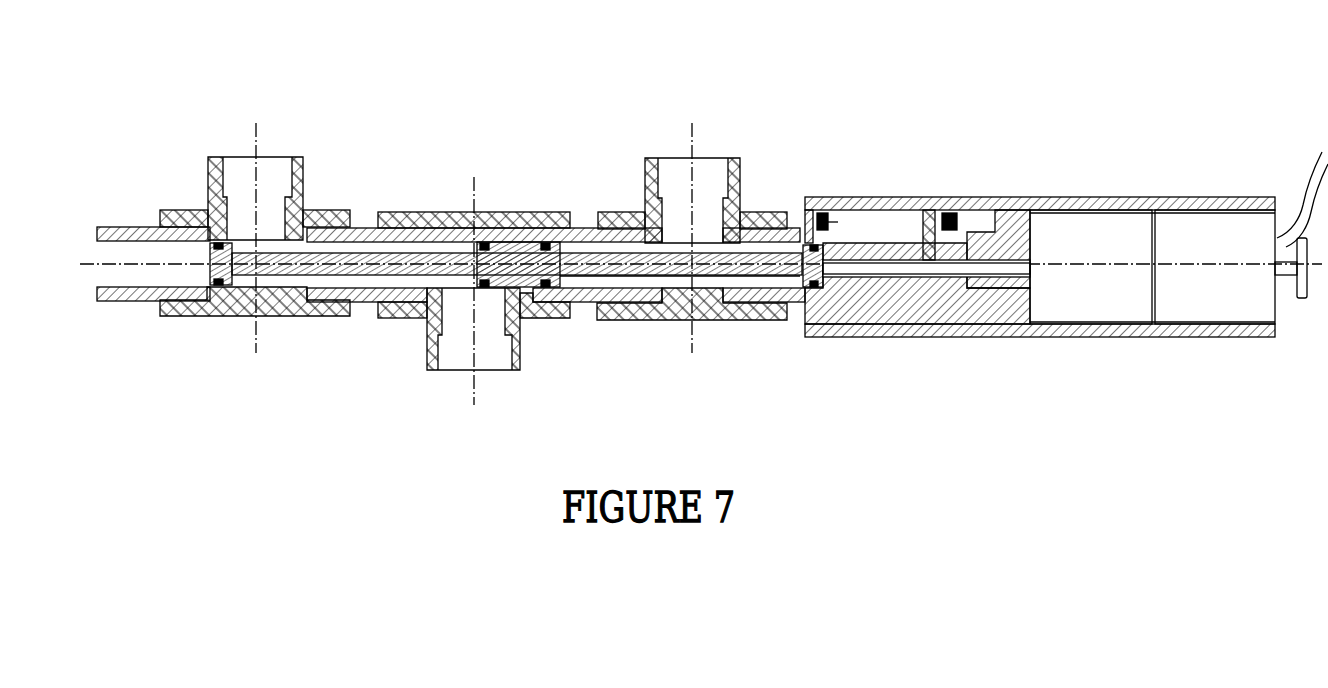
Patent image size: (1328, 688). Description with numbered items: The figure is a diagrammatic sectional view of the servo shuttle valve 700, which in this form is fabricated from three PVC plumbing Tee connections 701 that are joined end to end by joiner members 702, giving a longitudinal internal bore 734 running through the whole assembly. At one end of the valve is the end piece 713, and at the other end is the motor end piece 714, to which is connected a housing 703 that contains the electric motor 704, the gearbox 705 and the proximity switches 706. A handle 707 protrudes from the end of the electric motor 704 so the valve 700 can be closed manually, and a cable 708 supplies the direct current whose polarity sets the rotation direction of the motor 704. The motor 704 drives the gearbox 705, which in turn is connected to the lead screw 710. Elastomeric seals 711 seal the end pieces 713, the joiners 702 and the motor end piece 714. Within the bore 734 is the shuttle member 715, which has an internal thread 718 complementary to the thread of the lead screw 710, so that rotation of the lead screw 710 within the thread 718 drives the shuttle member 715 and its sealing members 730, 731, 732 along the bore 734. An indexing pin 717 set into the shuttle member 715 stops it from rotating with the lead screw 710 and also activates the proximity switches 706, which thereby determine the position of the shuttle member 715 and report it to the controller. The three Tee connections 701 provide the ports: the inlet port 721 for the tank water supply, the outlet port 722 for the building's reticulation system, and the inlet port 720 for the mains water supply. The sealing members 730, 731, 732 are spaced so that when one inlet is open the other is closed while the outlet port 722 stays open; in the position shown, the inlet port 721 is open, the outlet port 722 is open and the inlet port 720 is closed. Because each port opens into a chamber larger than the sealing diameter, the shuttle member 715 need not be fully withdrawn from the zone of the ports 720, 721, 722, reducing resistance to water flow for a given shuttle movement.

The servo shuttle valve 700 is at (580, 147).
The Tee connections 701 is at (305, 156).
The joiner members 702 is at (363, 308).
The housing 703 is at (990, 338).
The electric motor 704 is at (1192, 238).
The gearbox 705 is at (1088, 238).
The proximity switches 706 is at (827, 210).
The handle 707 is at (1302, 300).
The cable 708 is at (1313, 168).
The lead screw 710 is at (987, 280).
The elastomeric seals 711 is at (218, 242).
The end pieces 713 is at (133, 302).
The motor end piece 714 is at (918, 315).
The shuttle member 715 is at (657, 280).
The indexing pin 717 is at (928, 208).
The internal thread 718 is at (873, 290).
The inlet port 720 is at (672, 163).
The inlet port 721 is at (240, 157).
The outlet port 722 is at (482, 365).
The sealing member 730 is at (513, 242).
The sealing member 731 is at (210, 280).
The sealing member 732 is at (800, 286).
The longitudinal internal bore 734 is at (320, 283).